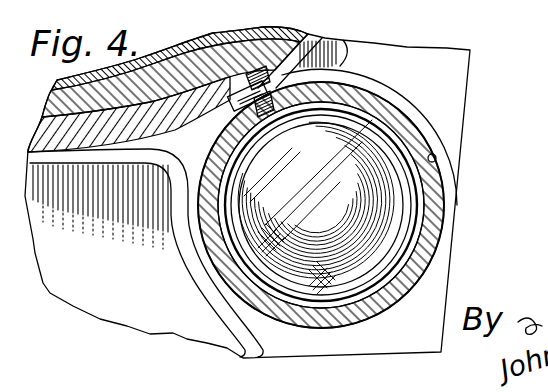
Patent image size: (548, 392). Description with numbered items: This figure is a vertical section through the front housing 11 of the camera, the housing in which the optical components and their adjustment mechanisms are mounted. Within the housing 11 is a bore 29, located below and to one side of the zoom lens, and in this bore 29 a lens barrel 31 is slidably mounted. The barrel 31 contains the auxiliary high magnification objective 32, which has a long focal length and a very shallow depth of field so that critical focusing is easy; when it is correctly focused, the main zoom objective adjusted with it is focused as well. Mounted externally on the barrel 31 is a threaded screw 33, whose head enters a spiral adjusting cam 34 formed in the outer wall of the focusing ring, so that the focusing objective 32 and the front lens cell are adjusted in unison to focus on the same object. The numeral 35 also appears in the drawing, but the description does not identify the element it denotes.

The front housing 11 is at (469, 72).
The bore 29 is at (437, 164).
The lens barrel 31 is at (377, 97).
The auxiliary high magnification objective 32 is at (405, 209).
The threaded screw 33 is at (230, 97).
The spiral adjusting cam 34 is at (304, 38).
The reflector rim 35 is at (175, 58).